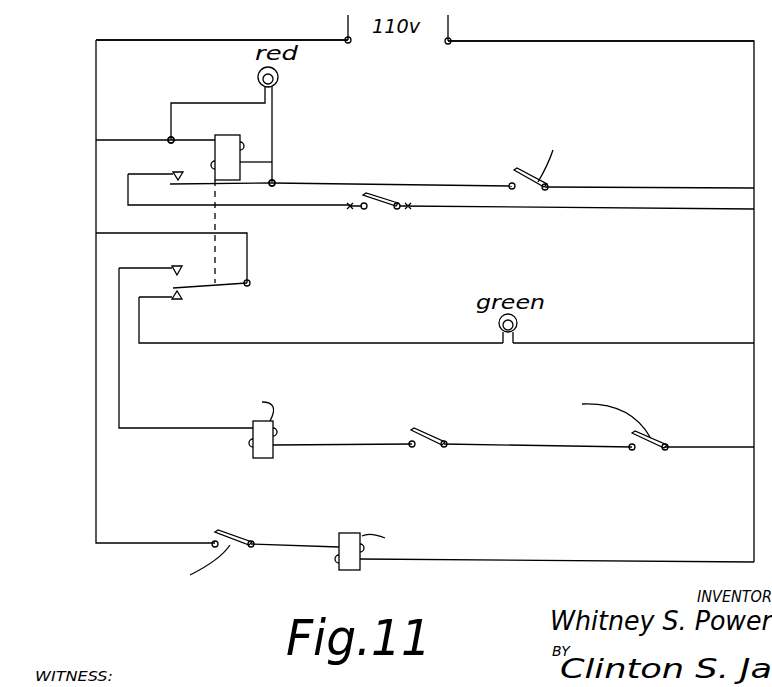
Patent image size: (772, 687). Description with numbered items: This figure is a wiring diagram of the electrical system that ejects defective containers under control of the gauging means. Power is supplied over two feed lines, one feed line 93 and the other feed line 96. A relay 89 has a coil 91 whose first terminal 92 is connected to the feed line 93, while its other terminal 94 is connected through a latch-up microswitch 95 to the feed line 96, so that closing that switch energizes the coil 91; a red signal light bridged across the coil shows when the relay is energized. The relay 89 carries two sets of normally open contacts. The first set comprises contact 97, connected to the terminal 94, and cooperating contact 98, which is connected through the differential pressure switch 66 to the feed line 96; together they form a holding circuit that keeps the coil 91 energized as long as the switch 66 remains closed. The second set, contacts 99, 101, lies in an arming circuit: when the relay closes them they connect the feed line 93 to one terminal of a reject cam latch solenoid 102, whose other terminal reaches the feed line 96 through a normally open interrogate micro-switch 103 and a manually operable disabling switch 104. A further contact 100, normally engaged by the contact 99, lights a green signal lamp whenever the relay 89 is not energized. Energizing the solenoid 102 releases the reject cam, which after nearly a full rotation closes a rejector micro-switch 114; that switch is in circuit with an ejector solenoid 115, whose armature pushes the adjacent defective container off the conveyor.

The feed line 93 is at (218, 40).
The feed line 96 is at (620, 41).
The relay 89 is at (118, 212).
The coil 91 is at (213, 135).
The terminal 92 is at (169, 138).
The terminal 94 is at (277, 181).
The latch-up microswitch 95 is at (547, 184).
The relay contact 97 is at (186, 187).
The relay contact 98 is at (175, 174).
The differential-pressure electrical switch 66 is at (372, 204).
The relay contact 99 is at (203, 282).
The contact 100 is at (186, 296).
The relay contact 101 is at (133, 266).
The reject cam latch solenoid 102 is at (255, 413).
The interrogate micro-switch 103 is at (428, 438).
The disabling switch 104 is at (615, 411).
The rejector micro-switch 114 is at (187, 564).
The ejector solenoid 115 is at (362, 567).